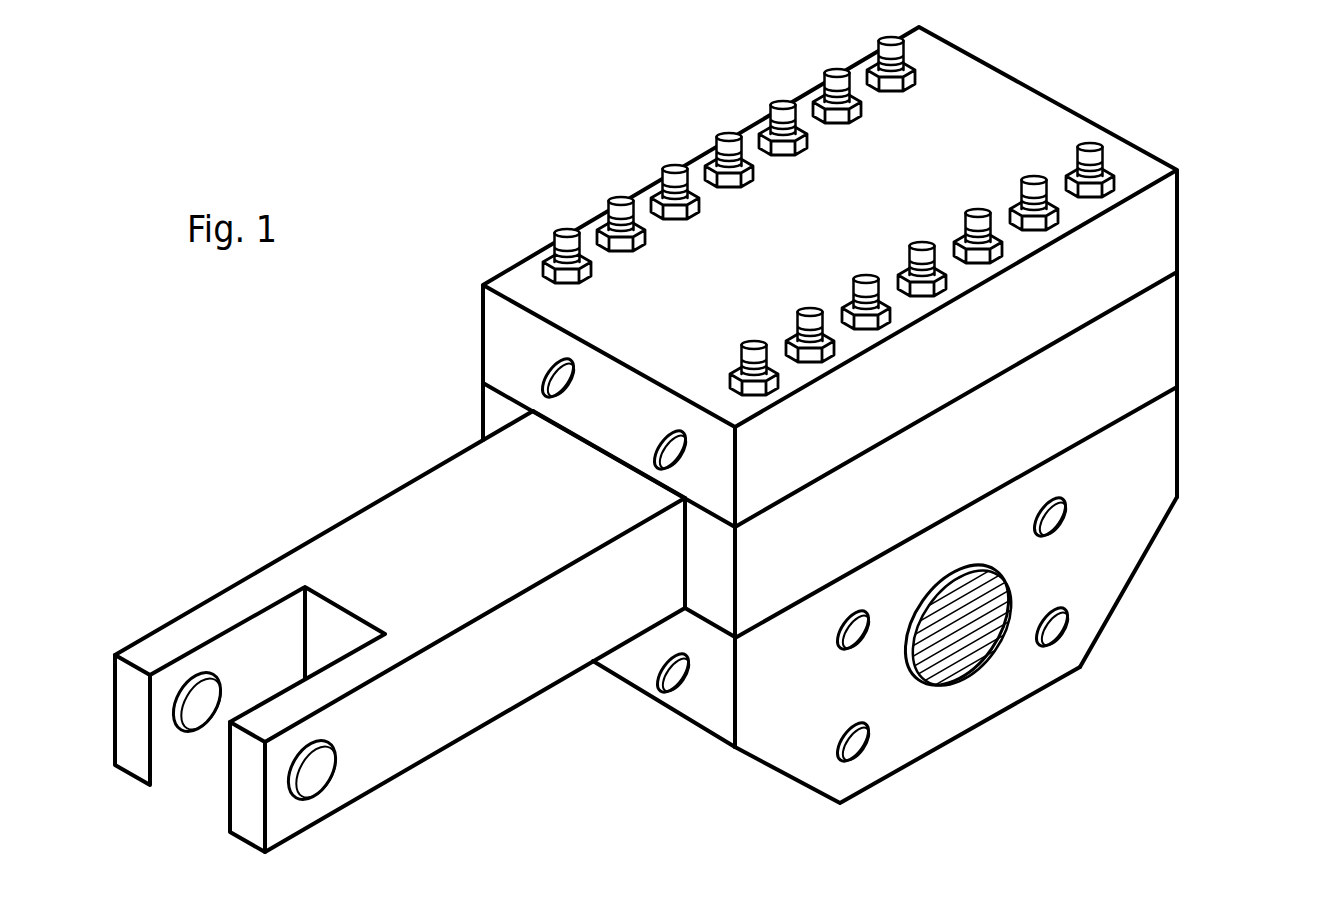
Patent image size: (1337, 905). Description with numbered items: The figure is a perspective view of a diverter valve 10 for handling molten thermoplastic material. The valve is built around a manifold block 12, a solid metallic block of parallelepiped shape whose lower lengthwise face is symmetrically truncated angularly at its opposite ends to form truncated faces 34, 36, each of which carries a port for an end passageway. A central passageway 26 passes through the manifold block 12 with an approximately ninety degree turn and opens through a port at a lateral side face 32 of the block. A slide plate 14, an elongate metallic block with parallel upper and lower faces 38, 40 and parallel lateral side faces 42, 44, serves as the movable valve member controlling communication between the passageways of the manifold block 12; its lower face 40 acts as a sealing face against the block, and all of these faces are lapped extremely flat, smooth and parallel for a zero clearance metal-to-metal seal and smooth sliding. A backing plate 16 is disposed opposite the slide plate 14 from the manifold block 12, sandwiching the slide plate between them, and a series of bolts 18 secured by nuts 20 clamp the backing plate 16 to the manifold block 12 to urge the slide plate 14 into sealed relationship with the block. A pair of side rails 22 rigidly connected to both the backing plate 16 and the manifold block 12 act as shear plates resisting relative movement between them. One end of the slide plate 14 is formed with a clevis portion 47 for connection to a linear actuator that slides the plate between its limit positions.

The diverter valve 10 is at (712, 439).
The manifold block 12 is at (913, 621).
The slide plate 14 is at (400, 635).
The backing plate 16 is at (1165, 220).
The bolts 18 is at (833, 75).
The nuts 20 is at (697, 160).
The side rails 22 is at (1163, 343).
The central passageway 26 is at (995, 640).
The lateral side face 32 is at (771, 706).
The truncated face 34 is at (763, 770).
The truncated face 36 is at (1108, 633).
The upper face 38 is at (504, 516).
The lower face 40 is at (585, 672).
The lateral side face 42 is at (574, 623).
The lateral side face 44 is at (380, 498).
The clevis portion 47 is at (392, 763).